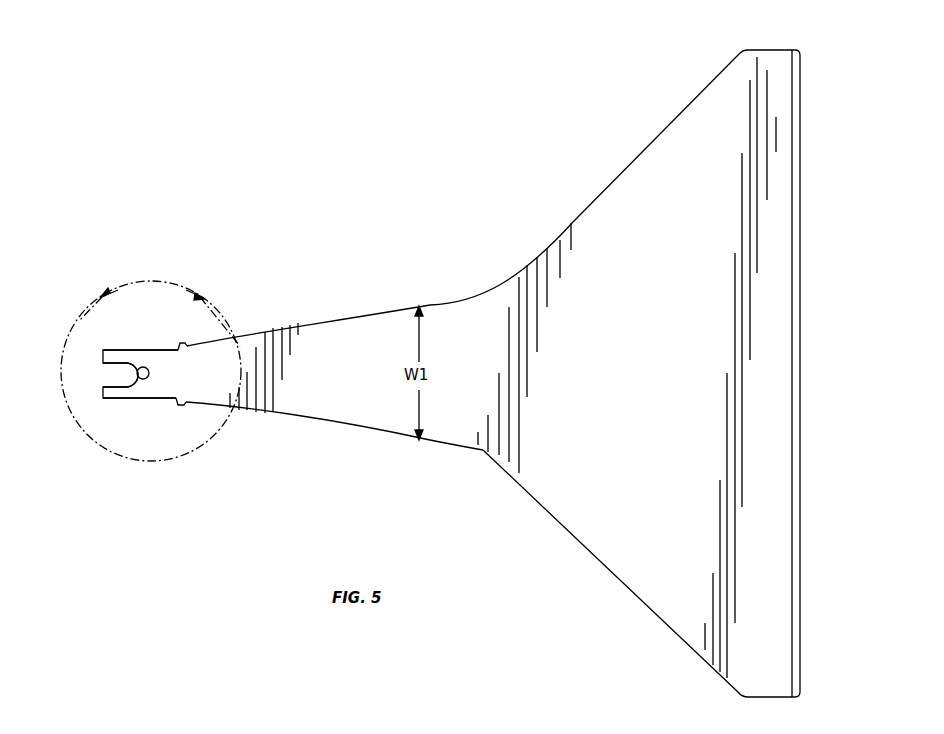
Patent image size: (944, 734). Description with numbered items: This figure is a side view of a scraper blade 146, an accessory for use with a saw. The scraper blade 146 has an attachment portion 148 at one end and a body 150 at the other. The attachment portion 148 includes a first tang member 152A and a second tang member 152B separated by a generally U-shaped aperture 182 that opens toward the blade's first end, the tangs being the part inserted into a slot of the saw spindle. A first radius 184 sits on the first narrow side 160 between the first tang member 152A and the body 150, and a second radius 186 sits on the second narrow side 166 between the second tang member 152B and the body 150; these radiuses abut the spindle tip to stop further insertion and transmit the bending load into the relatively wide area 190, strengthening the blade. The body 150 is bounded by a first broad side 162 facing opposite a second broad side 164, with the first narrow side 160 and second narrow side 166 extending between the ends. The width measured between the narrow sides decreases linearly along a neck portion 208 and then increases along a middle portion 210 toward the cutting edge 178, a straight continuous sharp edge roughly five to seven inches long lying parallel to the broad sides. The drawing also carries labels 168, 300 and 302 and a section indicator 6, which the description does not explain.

The scraper blade 146 is at (365, 162).
The attachment portion 148 is at (143, 399).
The body 150 is at (573, 222).
The first tang member 152A is at (115, 348).
The second tang member 152B is at (111, 399).
The first narrow side 160 is at (325, 315).
The first broad side 162 is at (695, 175).
The second broad side 164 is at (612, 562).
The second narrow side 166 is at (485, 448).
The inner edge line 168 is at (801, 238).
The cutting edge 178 is at (801, 422).
The U-shaped aperture 182 is at (110, 380).
The first radius 184 is at (172, 347).
The second radius 186 is at (180, 417).
The area of stress concentration 190 is at (243, 342).
The neck portion 208 is at (228, 262).
The middle portion 210 is at (444, 236).
The handle attachment region 300 is at (101, 356).
The blade top edge 302 is at (801, 95).
The section line 6- 6 is at (160, 311).